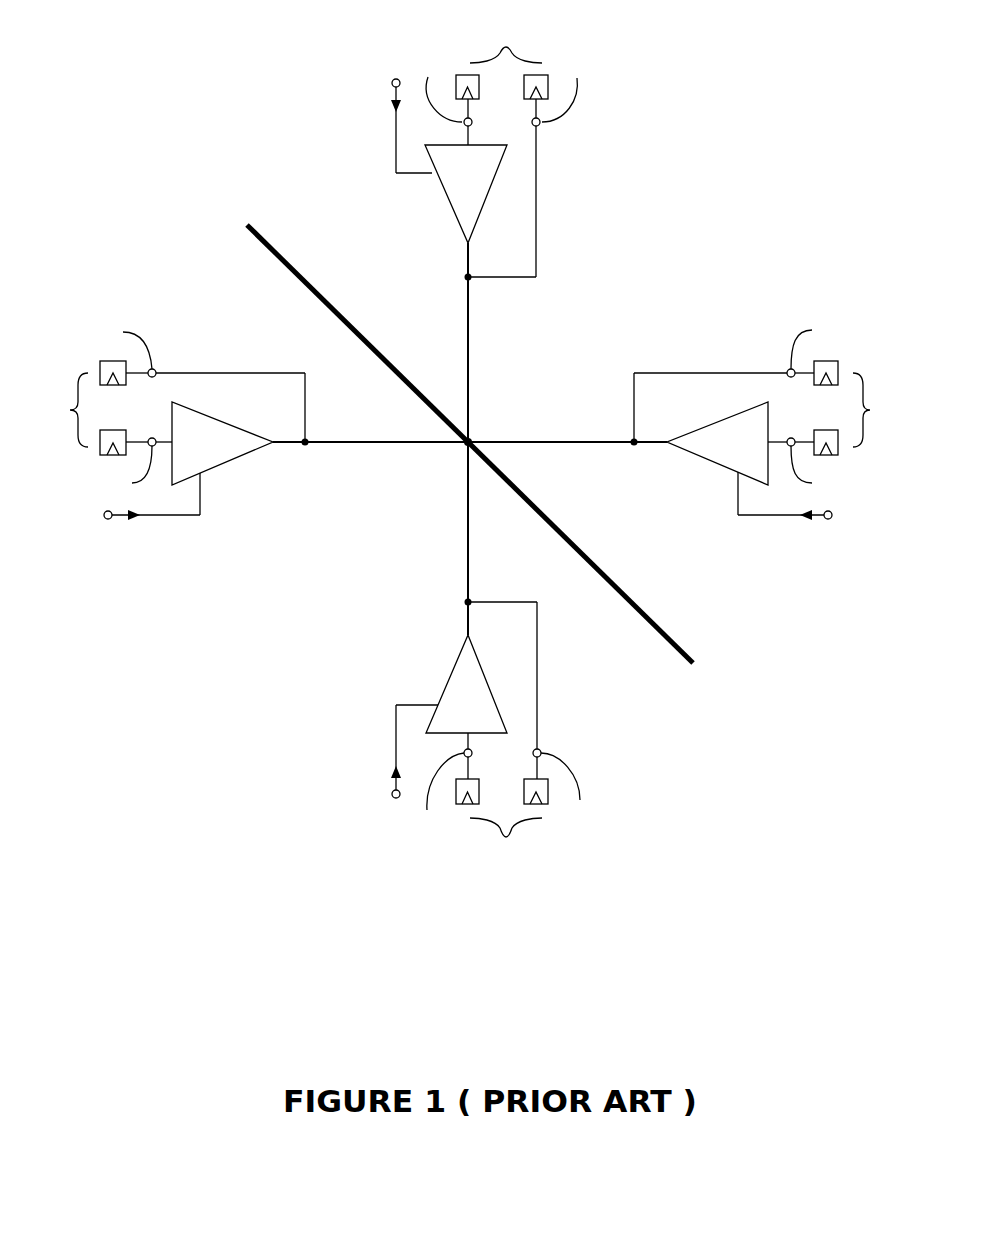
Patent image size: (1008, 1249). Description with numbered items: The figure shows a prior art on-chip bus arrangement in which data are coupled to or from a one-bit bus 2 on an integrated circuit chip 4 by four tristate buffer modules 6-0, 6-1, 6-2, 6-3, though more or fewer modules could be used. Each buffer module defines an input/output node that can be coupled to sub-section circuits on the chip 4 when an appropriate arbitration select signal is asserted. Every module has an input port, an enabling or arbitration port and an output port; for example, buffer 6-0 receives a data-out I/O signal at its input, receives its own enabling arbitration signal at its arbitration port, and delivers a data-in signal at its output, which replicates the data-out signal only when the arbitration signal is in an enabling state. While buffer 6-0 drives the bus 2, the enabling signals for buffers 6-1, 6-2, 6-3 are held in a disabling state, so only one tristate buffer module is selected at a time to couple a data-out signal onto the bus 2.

The one-bit bus 2 is at (635, 605).
The integrated circuit chip 4 is at (750, 120).
The tristate buffer module 6-0 is at (232, 468).
The tristate buffer module 6-1 is at (440, 683).
The tristate buffer module 6-2 is at (712, 463).
The tristate buffer module 6-3 is at (443, 193).